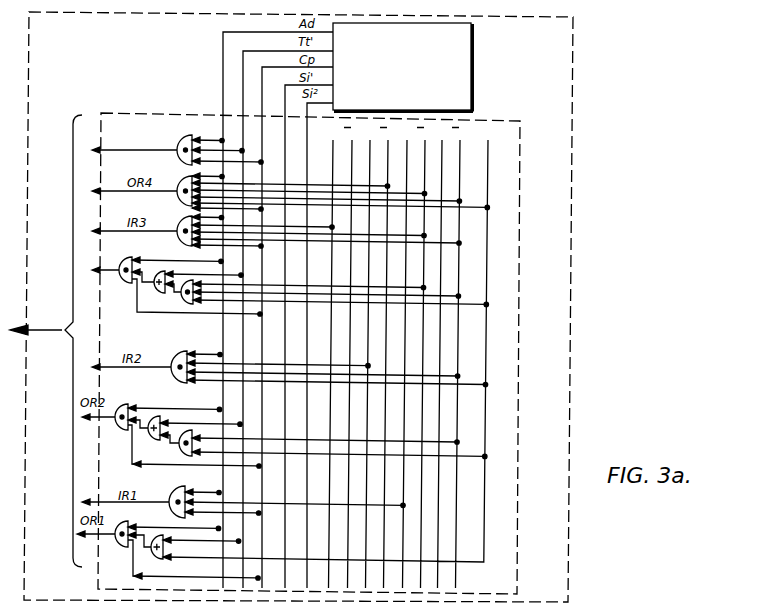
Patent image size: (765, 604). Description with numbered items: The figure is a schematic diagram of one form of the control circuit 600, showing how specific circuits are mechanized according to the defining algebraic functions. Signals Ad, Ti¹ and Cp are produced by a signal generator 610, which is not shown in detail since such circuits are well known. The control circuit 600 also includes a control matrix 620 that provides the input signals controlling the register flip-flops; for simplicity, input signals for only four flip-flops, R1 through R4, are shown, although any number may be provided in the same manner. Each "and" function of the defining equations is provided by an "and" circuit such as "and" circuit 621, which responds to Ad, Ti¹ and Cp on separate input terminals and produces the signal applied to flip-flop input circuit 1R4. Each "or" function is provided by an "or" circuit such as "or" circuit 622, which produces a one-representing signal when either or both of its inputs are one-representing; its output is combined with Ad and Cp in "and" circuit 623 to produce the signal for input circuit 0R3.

The control circuit 600 is at (573, 164).
The signal generator 610 is at (471, 104).
The control matrix 620 is at (520, 243).
The "and" circuit 621 is at (184, 135).
The "or" circuit 622 is at (170, 270).
The "and" circuit 623 is at (122, 281).